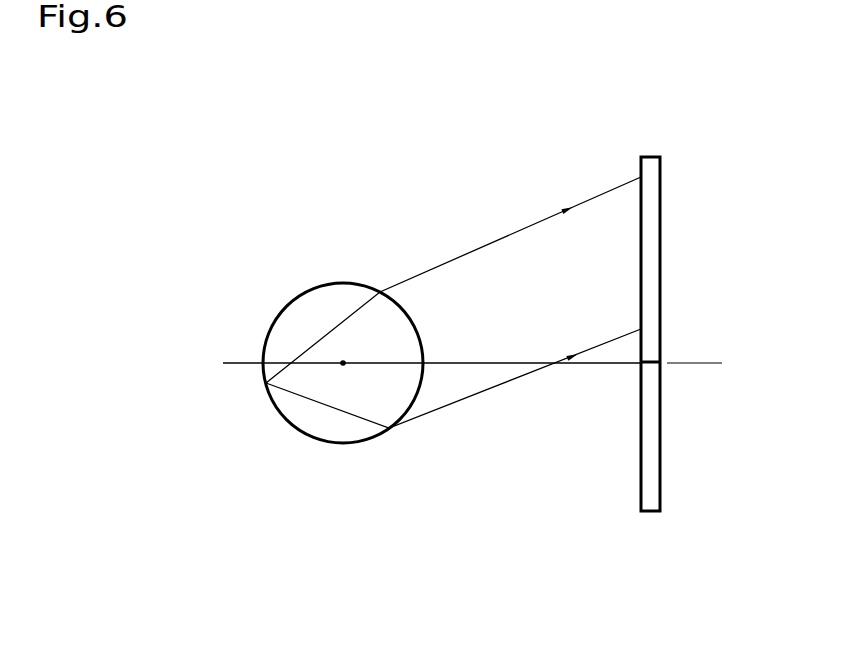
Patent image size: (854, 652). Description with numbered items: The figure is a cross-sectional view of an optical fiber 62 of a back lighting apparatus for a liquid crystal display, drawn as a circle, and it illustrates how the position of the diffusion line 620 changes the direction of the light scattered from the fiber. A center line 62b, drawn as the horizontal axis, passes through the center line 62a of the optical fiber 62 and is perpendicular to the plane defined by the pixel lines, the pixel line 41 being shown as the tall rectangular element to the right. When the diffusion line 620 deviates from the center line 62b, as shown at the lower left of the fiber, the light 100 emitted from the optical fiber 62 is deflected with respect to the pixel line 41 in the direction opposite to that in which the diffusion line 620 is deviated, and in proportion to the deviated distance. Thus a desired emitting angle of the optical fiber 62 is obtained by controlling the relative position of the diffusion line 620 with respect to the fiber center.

The optical fiber 62 is at (341, 283).
The center line of the optical fiber 62a is at (343, 360).
The center line 62b is at (690, 362).
The diffusion line 620 is at (266, 382).
The light 100 is at (462, 258).
The pixel line 41 is at (652, 185).